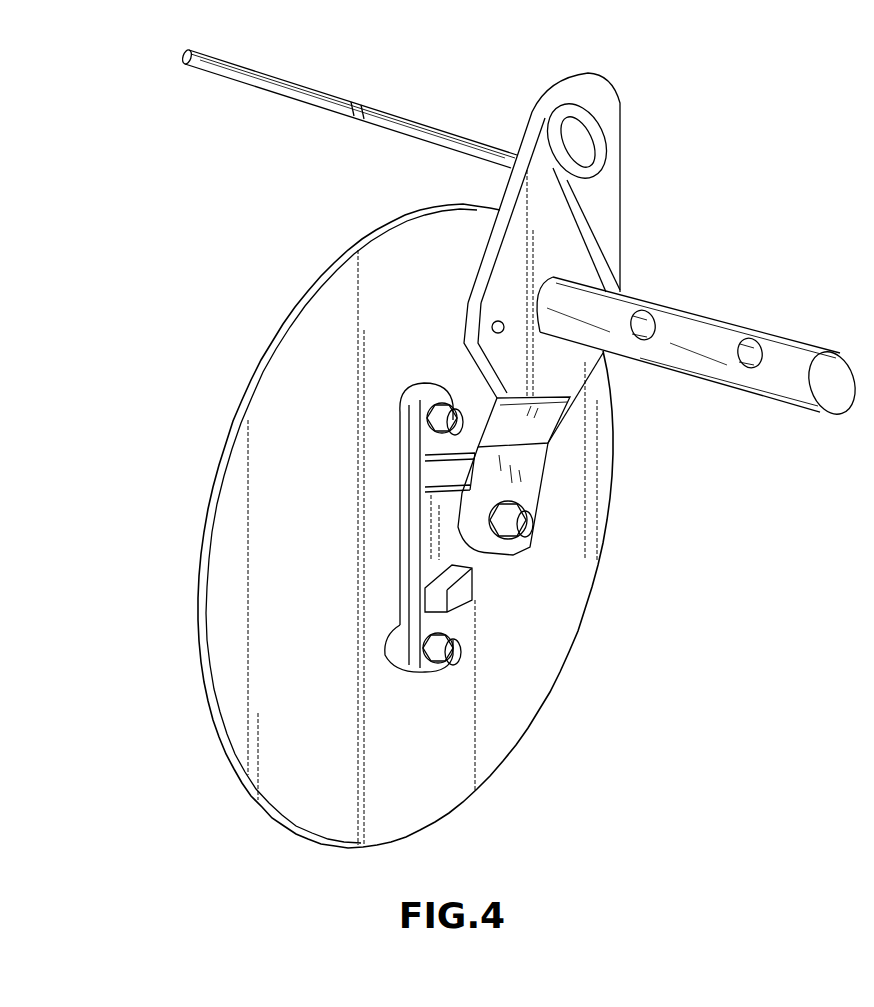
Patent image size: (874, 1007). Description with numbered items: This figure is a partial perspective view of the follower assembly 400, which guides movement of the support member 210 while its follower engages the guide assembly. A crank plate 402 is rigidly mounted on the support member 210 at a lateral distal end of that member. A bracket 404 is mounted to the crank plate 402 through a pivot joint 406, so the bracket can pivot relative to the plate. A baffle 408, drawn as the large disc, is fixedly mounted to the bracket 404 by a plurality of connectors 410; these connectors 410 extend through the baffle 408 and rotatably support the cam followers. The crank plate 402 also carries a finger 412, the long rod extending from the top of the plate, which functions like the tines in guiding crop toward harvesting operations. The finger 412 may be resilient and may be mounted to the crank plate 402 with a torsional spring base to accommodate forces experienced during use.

The follower assembly 400 is at (205, 280).
The support member 210 is at (790, 357).
The crank plate 402 is at (620, 170).
The bracket 404 is at (400, 480).
The pivot joint 406 is at (527, 533).
The baffle 408 is at (207, 703).
The connectors 410 is at (438, 402).
The finger 412 is at (300, 86).